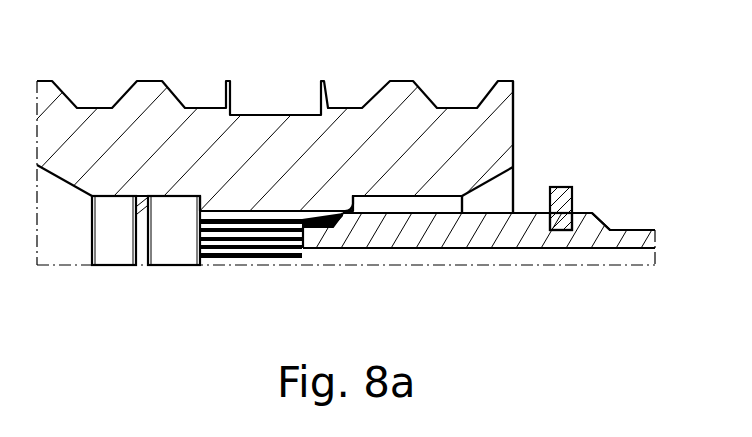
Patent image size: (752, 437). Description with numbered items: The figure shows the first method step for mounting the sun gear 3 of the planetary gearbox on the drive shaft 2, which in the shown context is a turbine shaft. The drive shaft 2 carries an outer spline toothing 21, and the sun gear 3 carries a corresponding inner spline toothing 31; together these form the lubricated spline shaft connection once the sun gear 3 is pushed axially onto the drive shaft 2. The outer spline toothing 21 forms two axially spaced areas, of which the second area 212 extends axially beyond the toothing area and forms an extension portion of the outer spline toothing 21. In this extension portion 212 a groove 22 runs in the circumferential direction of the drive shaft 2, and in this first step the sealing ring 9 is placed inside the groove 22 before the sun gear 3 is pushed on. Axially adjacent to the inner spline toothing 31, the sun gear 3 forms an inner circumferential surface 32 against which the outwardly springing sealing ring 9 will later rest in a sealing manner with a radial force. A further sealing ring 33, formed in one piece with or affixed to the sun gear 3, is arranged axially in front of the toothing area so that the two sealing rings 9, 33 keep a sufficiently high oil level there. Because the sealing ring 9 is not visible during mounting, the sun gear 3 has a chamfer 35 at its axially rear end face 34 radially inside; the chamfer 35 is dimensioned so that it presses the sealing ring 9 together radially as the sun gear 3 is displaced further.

The drive shaft 2 is at (630, 238).
The sun gear 3 is at (398, 100).
The sealing ring 9 is at (573, 205).
The outer spline toothing 21 is at (473, 230).
The groove 22 is at (568, 218).
The inner spline toothing 31 is at (263, 190).
The inner circumferential surface 32 is at (418, 213).
The further sealing ring 33 is at (147, 205).
The axially rear end face 34 is at (513, 122).
The chamfer 35 is at (498, 176).
The second area / extension portion 212 is at (528, 220).